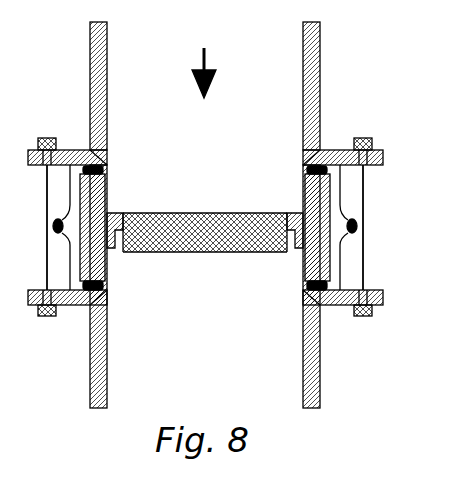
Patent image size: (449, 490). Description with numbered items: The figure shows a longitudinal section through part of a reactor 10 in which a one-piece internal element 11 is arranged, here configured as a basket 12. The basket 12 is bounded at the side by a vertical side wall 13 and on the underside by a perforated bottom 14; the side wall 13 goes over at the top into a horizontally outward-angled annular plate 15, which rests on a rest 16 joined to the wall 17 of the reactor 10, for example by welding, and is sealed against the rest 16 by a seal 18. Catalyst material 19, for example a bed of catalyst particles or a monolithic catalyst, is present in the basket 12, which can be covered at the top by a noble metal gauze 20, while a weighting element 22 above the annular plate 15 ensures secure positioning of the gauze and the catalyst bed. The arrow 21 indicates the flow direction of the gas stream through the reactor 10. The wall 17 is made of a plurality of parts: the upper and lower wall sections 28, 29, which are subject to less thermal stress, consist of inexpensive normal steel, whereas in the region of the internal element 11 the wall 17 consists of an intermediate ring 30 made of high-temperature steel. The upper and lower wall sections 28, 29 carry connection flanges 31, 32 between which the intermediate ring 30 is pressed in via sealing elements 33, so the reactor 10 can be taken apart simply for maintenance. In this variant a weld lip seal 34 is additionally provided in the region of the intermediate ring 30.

The reactor 10 is at (342, 73).
The one-piece internal element 11 is at (184, 248).
The basket 12 is at (112, 248).
The vertical side wall 13 is at (300, 246).
The perforated bottom 14 is at (228, 254).
The annular plate 15 is at (124, 214).
The rest 16 is at (55, 227).
The wall 17 is at (320, 108).
The seal 18 is at (296, 218).
The catalyst material 19 is at (182, 232).
The noble metal gauze 20 is at (218, 213).
The arrow 21 is at (207, 61).
The weighting element 22 is at (112, 212).
The upper wall section 28 is at (90, 56).
The lower wall section 29 is at (90, 383).
The intermediate ring 30 is at (84, 196).
The connection flange 31 is at (71, 148).
The connection flange 32 is at (74, 307).
The sealing elements 33 is at (104, 150).
The weld lip seal 34 is at (55, 226).